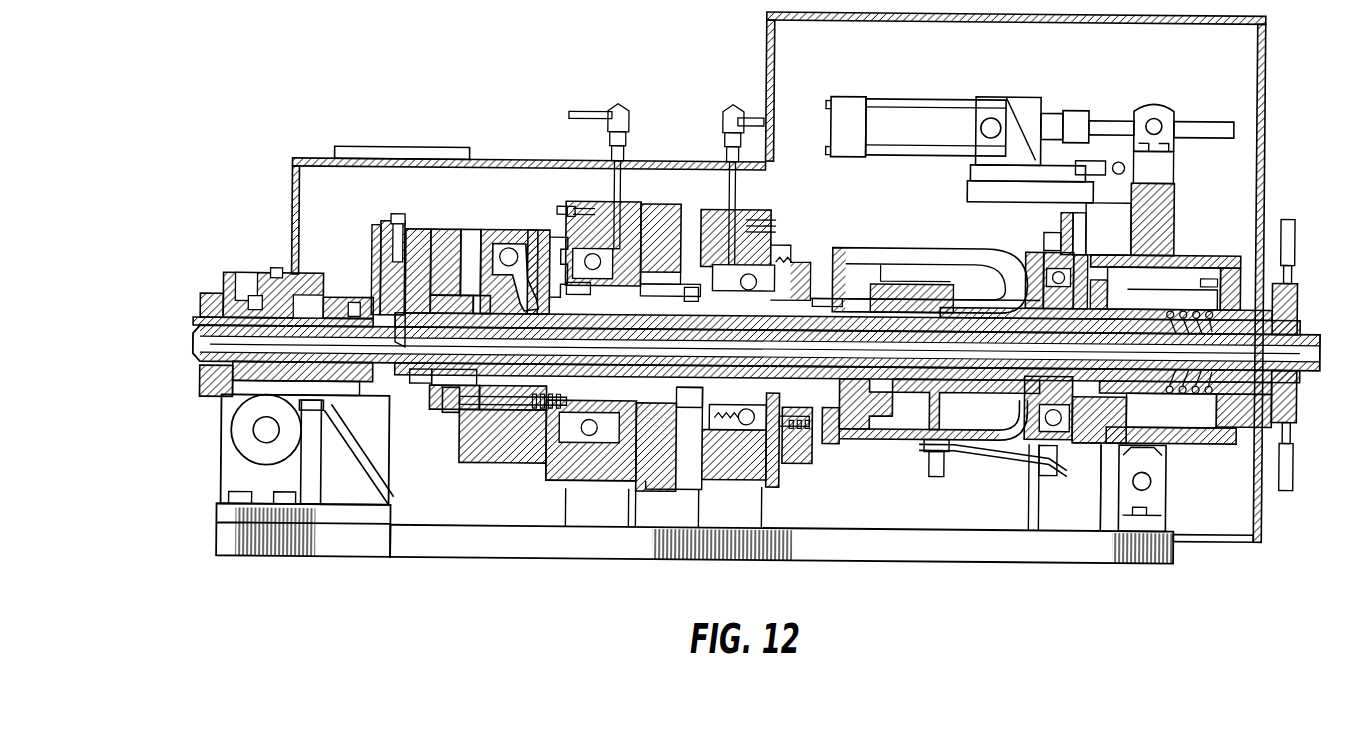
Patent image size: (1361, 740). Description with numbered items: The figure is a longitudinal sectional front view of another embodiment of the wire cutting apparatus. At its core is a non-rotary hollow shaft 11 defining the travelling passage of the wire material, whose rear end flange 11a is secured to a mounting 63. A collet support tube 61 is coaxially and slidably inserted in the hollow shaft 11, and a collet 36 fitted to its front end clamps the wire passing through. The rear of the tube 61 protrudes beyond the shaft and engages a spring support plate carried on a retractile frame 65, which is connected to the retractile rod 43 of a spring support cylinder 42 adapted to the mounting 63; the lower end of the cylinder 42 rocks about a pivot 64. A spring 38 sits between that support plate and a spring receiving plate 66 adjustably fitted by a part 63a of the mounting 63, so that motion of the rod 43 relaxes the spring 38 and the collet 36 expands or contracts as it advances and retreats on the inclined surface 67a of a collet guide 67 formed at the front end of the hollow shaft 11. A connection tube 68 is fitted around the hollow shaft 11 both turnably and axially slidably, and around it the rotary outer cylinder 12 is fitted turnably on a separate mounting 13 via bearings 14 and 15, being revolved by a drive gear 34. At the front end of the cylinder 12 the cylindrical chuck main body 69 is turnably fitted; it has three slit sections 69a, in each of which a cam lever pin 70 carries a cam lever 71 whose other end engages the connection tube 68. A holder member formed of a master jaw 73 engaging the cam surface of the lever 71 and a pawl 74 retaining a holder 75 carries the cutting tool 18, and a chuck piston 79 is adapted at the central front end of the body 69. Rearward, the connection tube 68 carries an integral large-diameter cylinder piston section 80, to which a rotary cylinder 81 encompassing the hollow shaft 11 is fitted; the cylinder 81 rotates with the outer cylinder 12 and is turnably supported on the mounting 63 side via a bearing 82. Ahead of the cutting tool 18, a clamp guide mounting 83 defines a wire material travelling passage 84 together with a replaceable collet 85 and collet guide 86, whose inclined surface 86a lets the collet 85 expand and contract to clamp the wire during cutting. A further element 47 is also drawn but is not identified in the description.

The hollow shaft 11 is at (844, 378).
The rear end flange 11a is at (1104, 290).
The rotary outer cylinder 12 is at (692, 288).
The mounting 13 is at (568, 200).
The bearing 14 is at (780, 243).
The bearing 15 is at (602, 285).
The cutting tool 18 is at (376, 265).
The drive gear 34 is at (660, 204).
The collet 36 is at (420, 378).
The spring 38 is at (1196, 307).
The spring support cylinder 42 is at (928, 116).
The retractile rod 43 is at (1112, 126).
The pin 47 is at (1168, 307).
The collet support tube 61 is at (1310, 331).
The mounting 63 is at (1083, 229).
The part of the mounting 63a is at (1202, 253).
The pivot 64 is at (1152, 479).
The retractile frame 65 is at (1163, 229).
The spring receiving plate 66 is at (1298, 299).
The collet guide 67 is at (436, 388).
The inclined surface 67a is at (400, 338).
The connection tube 68 is at (718, 374).
The chuck main body 69 is at (474, 457).
The slit section 69a is at (590, 296).
The cam lever pin 70 is at (496, 241).
The cam lever 71 is at (528, 233).
The master jaw 73 is at (502, 239).
The pawl 74 is at (446, 232).
The holder 75 is at (406, 232).
The chuck piston 79 is at (443, 404).
The cylinder piston section 80 is at (892, 406).
The rotary cylinder 81 is at (912, 450).
The bearing 82 is at (1034, 462).
The clamp guide mounting 83 is at (232, 296).
The wire material travelling passage 84 is at (215, 400).
The collet 85 is at (292, 284).
The collet guide 86 is at (353, 304).
The inclined surface 86a is at (334, 300).